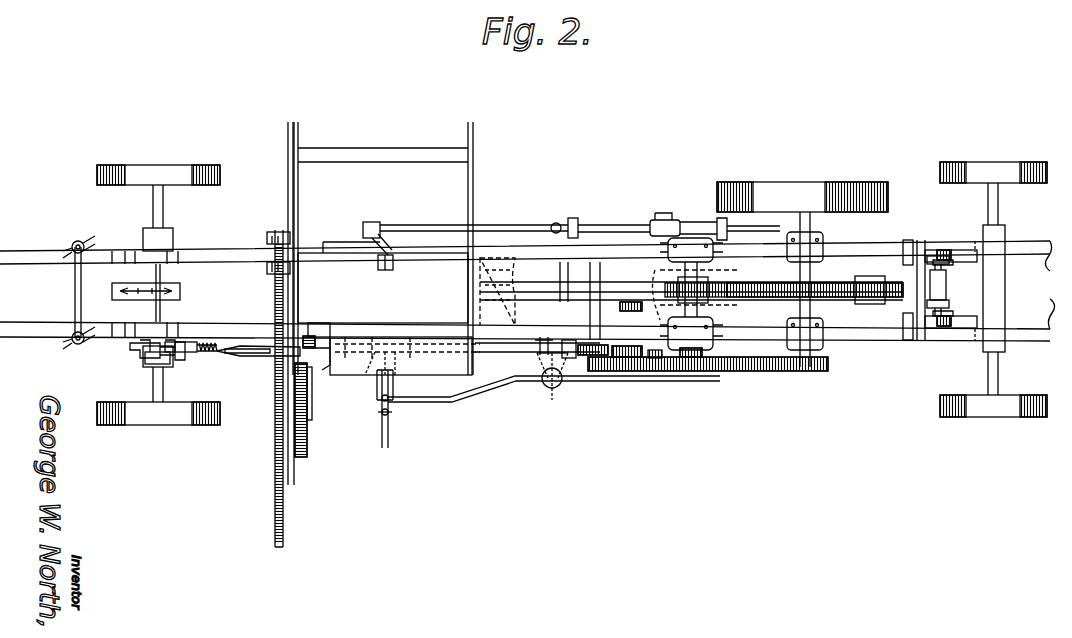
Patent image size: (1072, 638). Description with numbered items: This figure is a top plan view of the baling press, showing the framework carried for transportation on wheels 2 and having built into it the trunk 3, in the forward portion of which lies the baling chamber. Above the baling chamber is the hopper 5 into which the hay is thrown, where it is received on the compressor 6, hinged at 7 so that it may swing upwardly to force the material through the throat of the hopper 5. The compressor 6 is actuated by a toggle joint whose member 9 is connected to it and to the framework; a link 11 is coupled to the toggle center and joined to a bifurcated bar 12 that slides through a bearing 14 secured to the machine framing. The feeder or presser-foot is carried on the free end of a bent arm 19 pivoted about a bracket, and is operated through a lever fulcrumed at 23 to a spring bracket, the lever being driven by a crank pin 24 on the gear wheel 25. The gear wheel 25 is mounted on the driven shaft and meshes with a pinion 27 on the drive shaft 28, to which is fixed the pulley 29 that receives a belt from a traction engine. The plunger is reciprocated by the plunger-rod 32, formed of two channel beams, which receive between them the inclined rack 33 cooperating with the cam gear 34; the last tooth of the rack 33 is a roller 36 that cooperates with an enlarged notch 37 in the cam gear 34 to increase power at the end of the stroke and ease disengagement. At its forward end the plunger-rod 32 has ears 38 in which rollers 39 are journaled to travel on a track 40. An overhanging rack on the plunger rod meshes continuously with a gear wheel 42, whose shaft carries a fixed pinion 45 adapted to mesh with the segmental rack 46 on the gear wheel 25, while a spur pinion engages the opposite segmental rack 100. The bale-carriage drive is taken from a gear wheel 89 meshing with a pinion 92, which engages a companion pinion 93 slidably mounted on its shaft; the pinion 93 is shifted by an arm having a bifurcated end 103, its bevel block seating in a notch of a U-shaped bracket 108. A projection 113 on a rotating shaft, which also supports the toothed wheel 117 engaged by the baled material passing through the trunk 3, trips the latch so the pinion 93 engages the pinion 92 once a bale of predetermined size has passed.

The wheels 2 is at (178, 165).
The trunk 3 is at (62, 291).
The hopper 5 is at (473, 170).
The compressor 6 is at (340, 252).
The hinge 7 is at (1045, 315).
The toggle joint member 9 is at (380, 222).
The link 11 is at (480, 226).
The bifurcated bar 12 is at (600, 226).
The bearing 14 is at (573, 218).
The bent arm 19 is at (390, 446).
The fulcrum 23 is at (552, 390).
The crank pin 24 is at (696, 368).
The gear wheel 25 is at (764, 371).
The pinion 27 is at (508, 381).
The drive shaft 28 is at (814, 222).
The pulley 29 is at (840, 182).
The plunger-rod 32 is at (553, 290).
The inclined rack 33 is at (858, 300).
The cam gear 34 is at (668, 292).
The roller 36 is at (888, 300).
The enlarged notch 37 is at (480, 300).
The ears 38 is at (940, 286).
The rollers 39 is at (943, 254).
The track 40 is at (966, 330).
The gear wheel 42 is at (625, 308).
The fixed pinion 45 is at (688, 372).
The segmental rack 46 is at (650, 370).
The gear wheel 89 is at (307, 437).
The pinion 92 is at (290, 382).
The companion pinion 93 is at (316, 340).
The segmental rack 100 is at (602, 362).
The bifurcated end 103 is at (258, 358).
The U-shaped bracket 108 is at (158, 364).
The projection 113 is at (135, 346).
The toothed wheel 117 is at (155, 290).